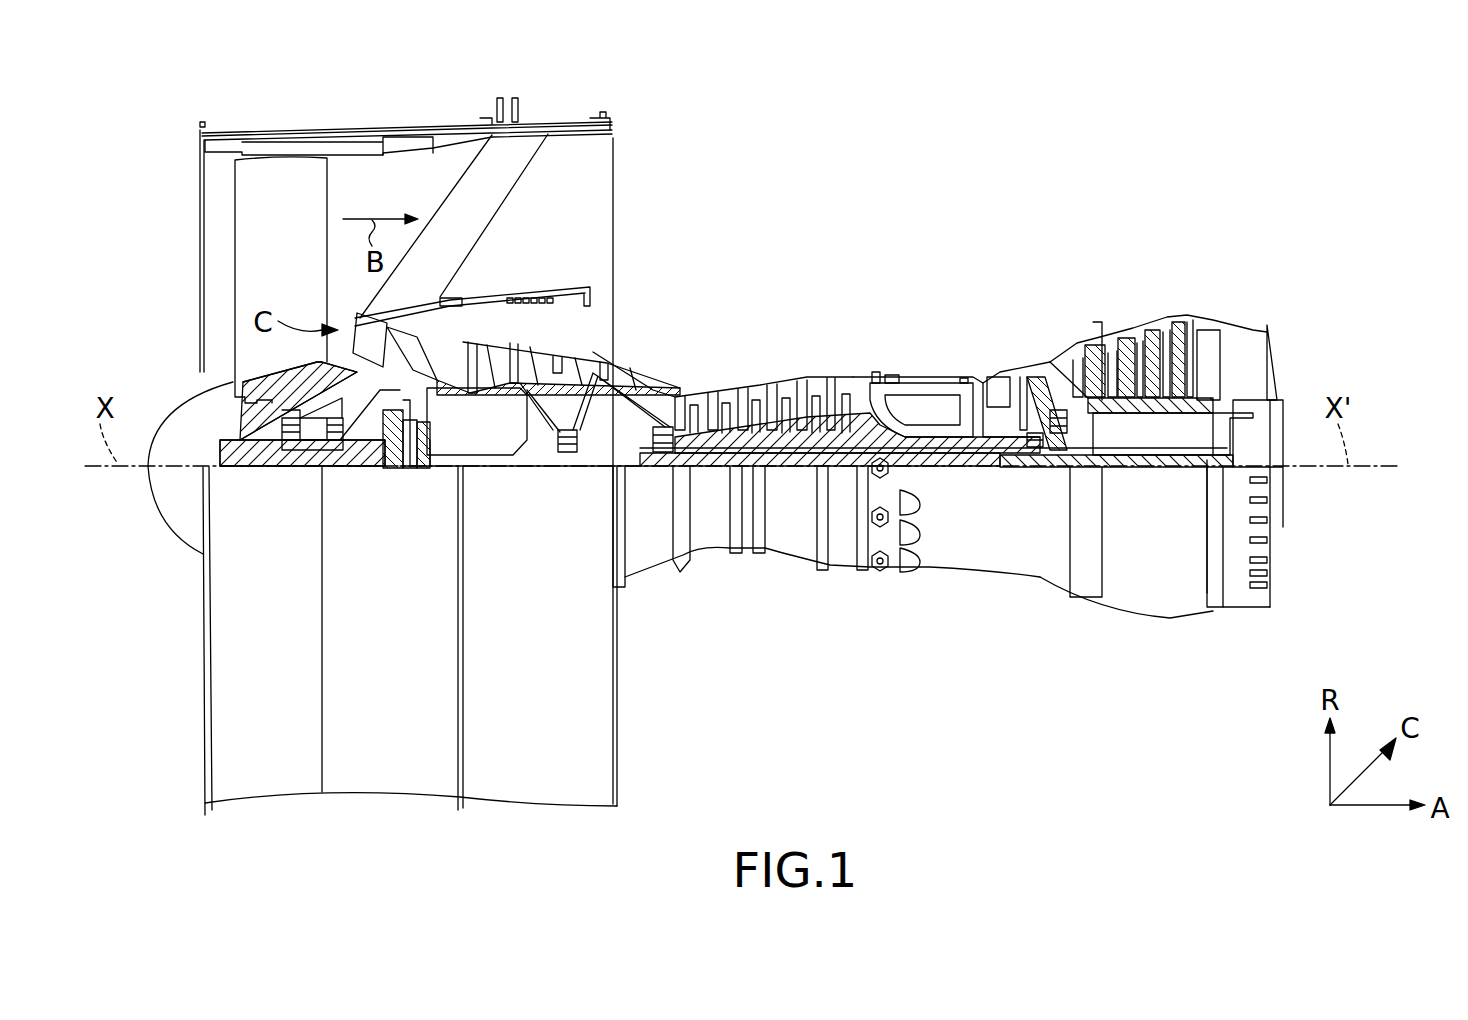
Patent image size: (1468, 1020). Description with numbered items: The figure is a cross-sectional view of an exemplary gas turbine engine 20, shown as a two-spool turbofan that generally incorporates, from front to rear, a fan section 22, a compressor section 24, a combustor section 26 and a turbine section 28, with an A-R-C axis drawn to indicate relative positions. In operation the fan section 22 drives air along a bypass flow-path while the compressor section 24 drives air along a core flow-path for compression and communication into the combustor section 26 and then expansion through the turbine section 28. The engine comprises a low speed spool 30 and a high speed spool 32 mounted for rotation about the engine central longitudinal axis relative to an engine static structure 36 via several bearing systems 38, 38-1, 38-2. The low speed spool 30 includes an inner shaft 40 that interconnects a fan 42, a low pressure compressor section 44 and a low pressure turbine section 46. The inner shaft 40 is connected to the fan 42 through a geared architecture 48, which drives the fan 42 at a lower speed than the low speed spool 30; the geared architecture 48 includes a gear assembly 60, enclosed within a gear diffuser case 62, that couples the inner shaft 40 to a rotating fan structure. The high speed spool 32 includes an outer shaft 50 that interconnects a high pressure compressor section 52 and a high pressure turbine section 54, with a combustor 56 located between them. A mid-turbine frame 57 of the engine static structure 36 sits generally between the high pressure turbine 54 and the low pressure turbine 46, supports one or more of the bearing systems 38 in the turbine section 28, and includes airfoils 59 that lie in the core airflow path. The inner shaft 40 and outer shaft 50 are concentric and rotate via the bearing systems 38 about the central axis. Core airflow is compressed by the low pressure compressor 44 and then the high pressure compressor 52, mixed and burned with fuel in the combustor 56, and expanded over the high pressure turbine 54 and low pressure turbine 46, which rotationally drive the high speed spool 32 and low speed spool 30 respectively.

The gas turbine engine 20 is at (983, 160).
The fan section 22 is at (192, 107).
The compressor section 24 is at (463, 249).
The combustor section 26 is at (980, 249).
The turbine section 28 is at (1212, 249).
The low speed spool 30 is at (800, 505).
The high speed spool 32 is at (840, 430).
The engine static structure 36 is at (178, 800).
The bearing system 38 is at (1048, 455).
The bearing system 38-1 is at (290, 440).
The bearing system 38-2 is at (568, 455).
The inner shaft 40 is at (640, 470).
The fan 42 is at (281, 280).
The low pressure compressor section 44 is at (540, 352).
The low pressure turbine section 46 is at (1140, 340).
The geared architecture 48 is at (423, 495).
The outer shaft 50 is at (905, 450).
The high pressure compressor section 52 is at (790, 393).
The high pressure turbine section 54 is at (1000, 375).
The combustor 56 is at (930, 398).
The mid-turbine frame 57 is at (1046, 372).
The airfoils 59 is at (1066, 380).
The gear assembly 60 is at (432, 440).
The gear diffuser case 62 is at (427, 408).